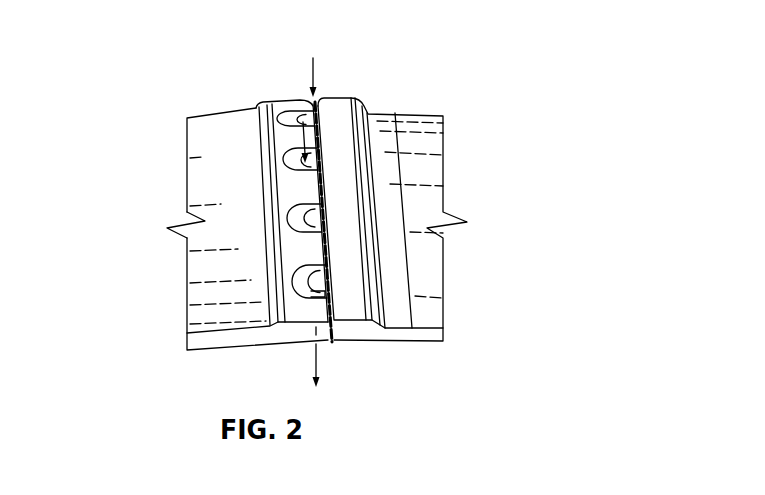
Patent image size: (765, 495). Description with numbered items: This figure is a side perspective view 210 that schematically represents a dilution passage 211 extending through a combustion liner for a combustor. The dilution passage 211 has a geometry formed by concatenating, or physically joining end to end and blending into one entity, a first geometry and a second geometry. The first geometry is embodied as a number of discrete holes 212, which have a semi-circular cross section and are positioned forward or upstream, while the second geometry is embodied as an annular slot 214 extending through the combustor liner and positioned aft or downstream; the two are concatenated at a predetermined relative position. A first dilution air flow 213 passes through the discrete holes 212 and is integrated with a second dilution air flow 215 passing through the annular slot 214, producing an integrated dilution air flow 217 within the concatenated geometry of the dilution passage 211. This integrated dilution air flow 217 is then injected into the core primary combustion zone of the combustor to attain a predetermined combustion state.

The side perspective view 210 is at (154, 254).
The dilution passage 211 is at (292, 237).
The discrete holes 212 is at (285, 116).
The first dilution air flow 213 is at (303, 153).
The annular slot 214 is at (340, 349).
The second dilution air flow 215 is at (312, 64).
The integrated dilution air flow 217 is at (313, 357).